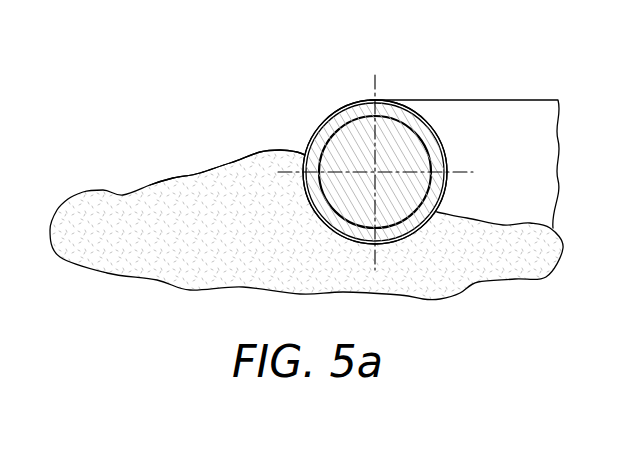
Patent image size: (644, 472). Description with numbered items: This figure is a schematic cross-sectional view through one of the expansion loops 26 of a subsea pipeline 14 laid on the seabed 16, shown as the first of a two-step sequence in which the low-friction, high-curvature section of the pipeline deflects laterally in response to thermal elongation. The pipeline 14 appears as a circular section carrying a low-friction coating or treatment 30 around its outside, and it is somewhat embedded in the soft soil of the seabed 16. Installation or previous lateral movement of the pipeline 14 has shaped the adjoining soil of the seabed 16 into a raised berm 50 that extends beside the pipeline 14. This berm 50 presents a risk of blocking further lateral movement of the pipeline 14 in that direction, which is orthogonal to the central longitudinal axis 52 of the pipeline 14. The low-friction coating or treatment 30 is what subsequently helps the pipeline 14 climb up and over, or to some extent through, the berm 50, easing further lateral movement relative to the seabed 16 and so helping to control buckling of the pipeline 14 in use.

The subsea pipeline 14 is at (514, 108).
The seabed 16 is at (97, 197).
The expansion loop 26 is at (388, 163).
The low-friction coating or treatment 30 is at (339, 105).
The raised berm 50 is at (200, 183).
The central longitudinal axis 52 is at (375, 172).